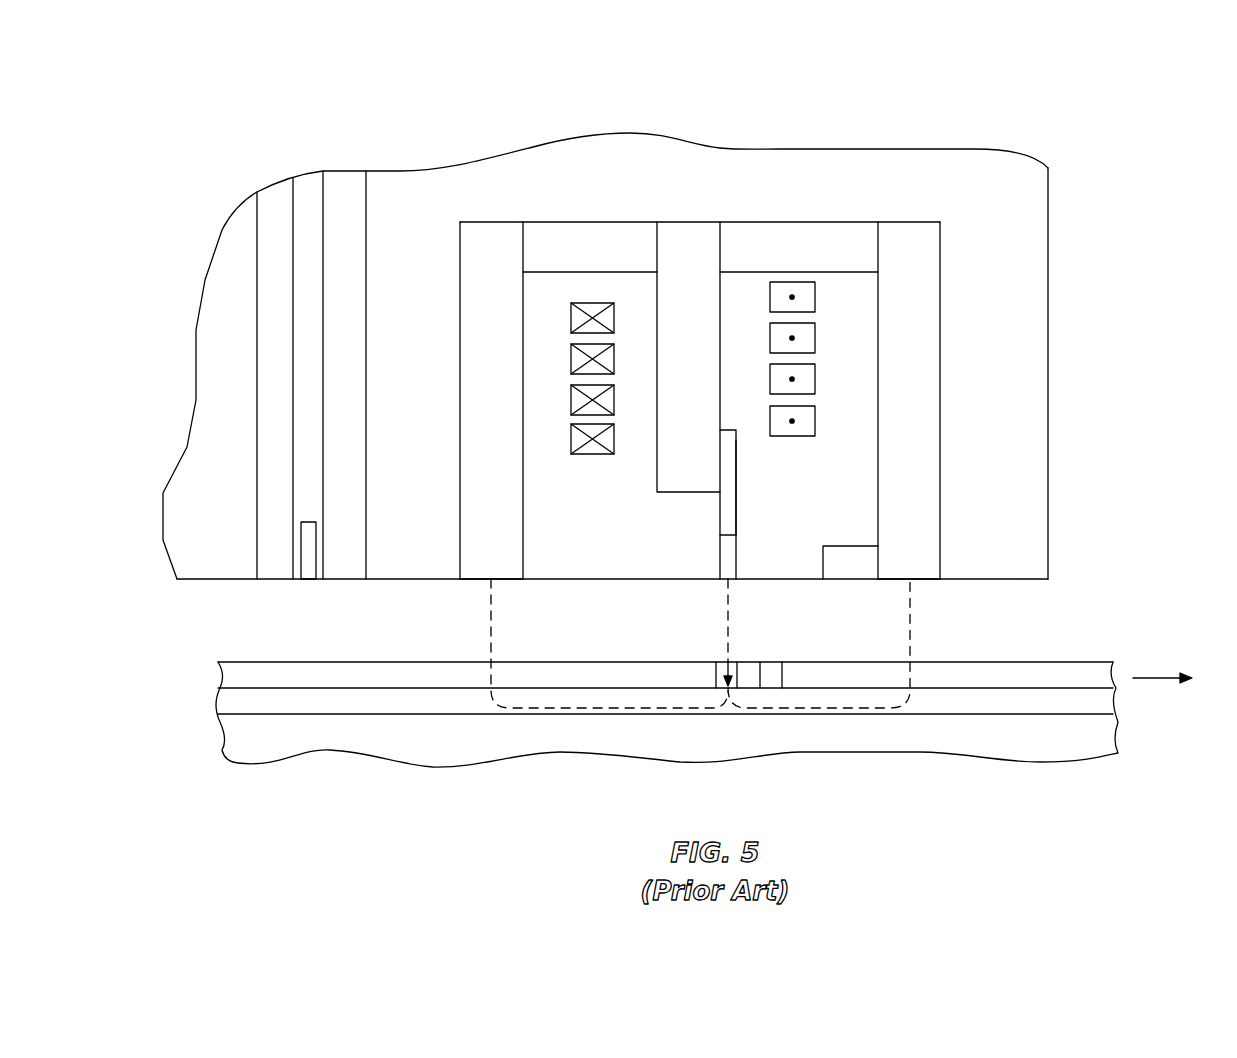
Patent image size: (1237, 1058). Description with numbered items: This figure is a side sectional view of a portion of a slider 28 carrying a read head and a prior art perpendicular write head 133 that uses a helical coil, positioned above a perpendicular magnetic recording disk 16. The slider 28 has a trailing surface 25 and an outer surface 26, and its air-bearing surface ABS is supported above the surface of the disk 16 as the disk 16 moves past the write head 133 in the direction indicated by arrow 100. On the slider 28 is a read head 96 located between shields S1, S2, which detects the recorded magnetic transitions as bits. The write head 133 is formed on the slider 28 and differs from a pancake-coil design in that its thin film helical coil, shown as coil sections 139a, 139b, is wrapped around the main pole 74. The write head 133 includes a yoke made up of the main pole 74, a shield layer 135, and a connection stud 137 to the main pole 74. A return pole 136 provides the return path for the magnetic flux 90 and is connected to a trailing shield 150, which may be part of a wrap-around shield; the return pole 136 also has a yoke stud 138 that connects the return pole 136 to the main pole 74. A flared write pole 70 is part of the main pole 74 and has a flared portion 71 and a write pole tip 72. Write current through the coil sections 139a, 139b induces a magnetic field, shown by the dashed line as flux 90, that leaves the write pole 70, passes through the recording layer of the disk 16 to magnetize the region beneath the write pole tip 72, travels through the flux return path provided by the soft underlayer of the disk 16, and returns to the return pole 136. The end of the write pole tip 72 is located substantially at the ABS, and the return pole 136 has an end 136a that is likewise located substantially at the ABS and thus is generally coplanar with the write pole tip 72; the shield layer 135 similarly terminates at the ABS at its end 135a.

The disk 16 is at (305, 772).
The trailing surface 25 is at (262, 272).
The outer surface 26 is at (1049, 390).
The slider 28 is at (1030, 240).
The flared write pole 70 is at (727, 430).
The flared portion 71 is at (729, 503).
The write pole tip 72 is at (728, 560).
The main pole 74 is at (721, 310).
The magnetic flux 90 is at (537, 710).
The read head 96 is at (308, 522).
The arrow indicating direction of disk motion 100 is at (1158, 680).
The perpendicular write head 133 is at (460, 102).
The shield layer 135 is at (467, 300).
The first return pole end 135a is at (476, 580).
The return pole 136 is at (932, 412).
The end of return pole 136a is at (925, 581).
The connection stud 137 is at (568, 232).
The yoke stud 138 is at (752, 232).
The coil section 139a is at (586, 303).
The coil section 139b is at (816, 298).
The trailing shield 150 is at (834, 556).
The shield S1 is at (266, 548).
The shield S2 is at (350, 558).
The air-bearing surface ABS is at (1028, 581).